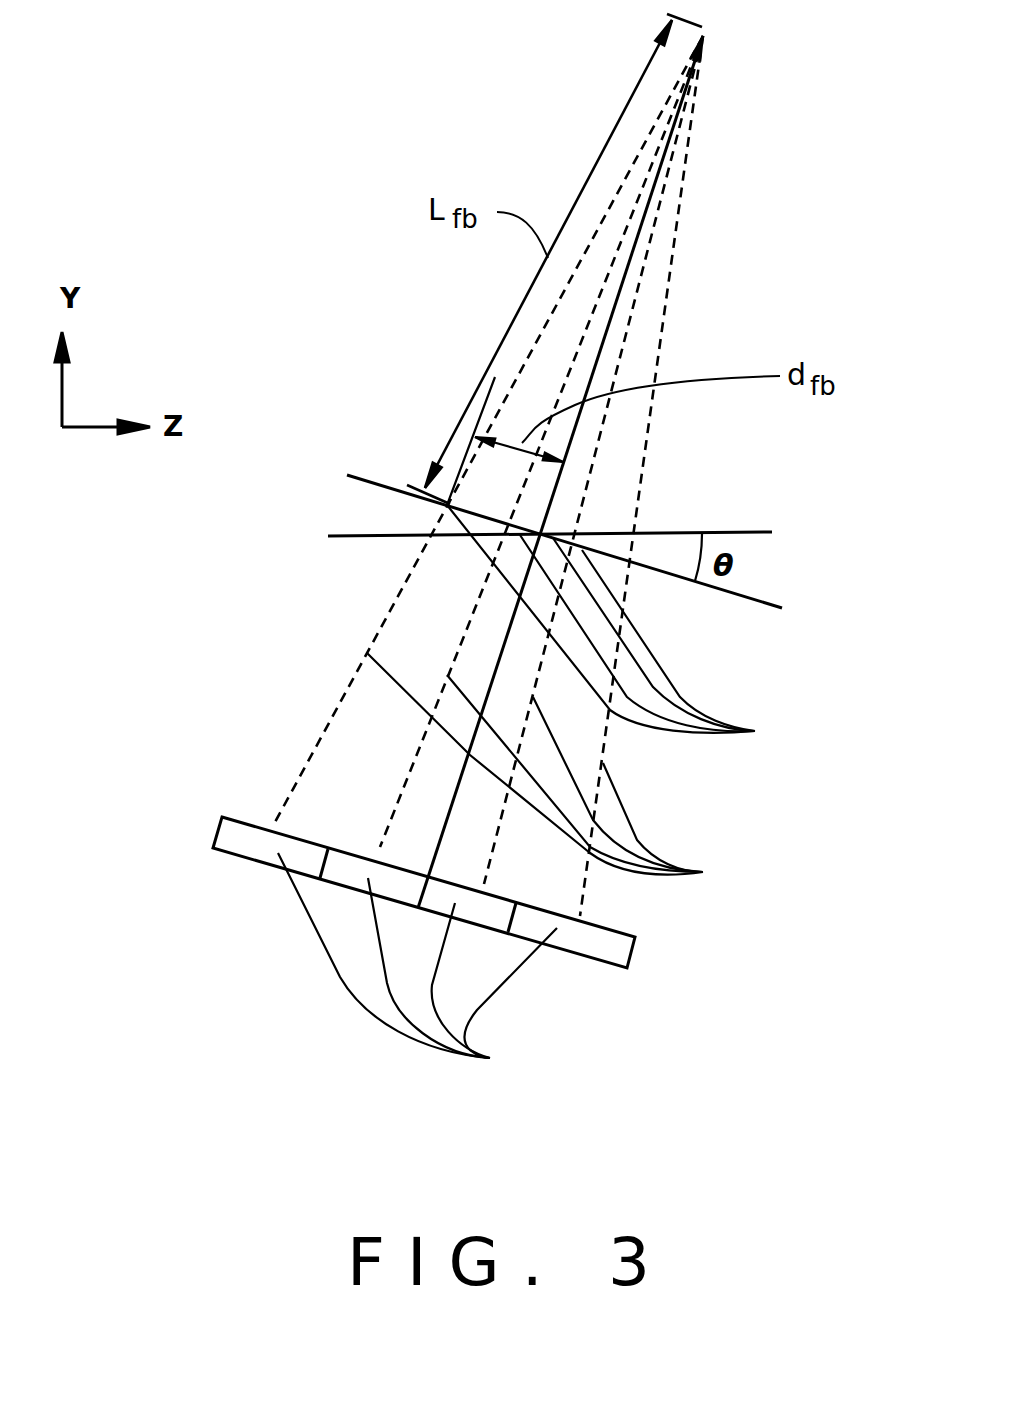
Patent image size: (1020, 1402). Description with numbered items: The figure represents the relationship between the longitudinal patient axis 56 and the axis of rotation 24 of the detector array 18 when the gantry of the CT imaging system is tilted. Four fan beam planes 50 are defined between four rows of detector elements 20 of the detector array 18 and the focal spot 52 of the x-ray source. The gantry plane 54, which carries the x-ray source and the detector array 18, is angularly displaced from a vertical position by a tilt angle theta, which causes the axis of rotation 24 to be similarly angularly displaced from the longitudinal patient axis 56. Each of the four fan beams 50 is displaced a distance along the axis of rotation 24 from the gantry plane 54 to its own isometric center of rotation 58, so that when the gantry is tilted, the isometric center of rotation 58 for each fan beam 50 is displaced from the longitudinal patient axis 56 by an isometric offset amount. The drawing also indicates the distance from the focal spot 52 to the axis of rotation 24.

The detector array 18 is at (268, 942).
The detector elements 20 is at (417, 965).
The axis of rotation 24 is at (735, 594).
The fan beam planes 50 is at (563, 773).
The focal spot 52 is at (706, 32).
The gantry plane 54 is at (612, 325).
The longitudinal patient axis 56 is at (742, 532).
The isometric center of rotation 58 is at (625, 565).